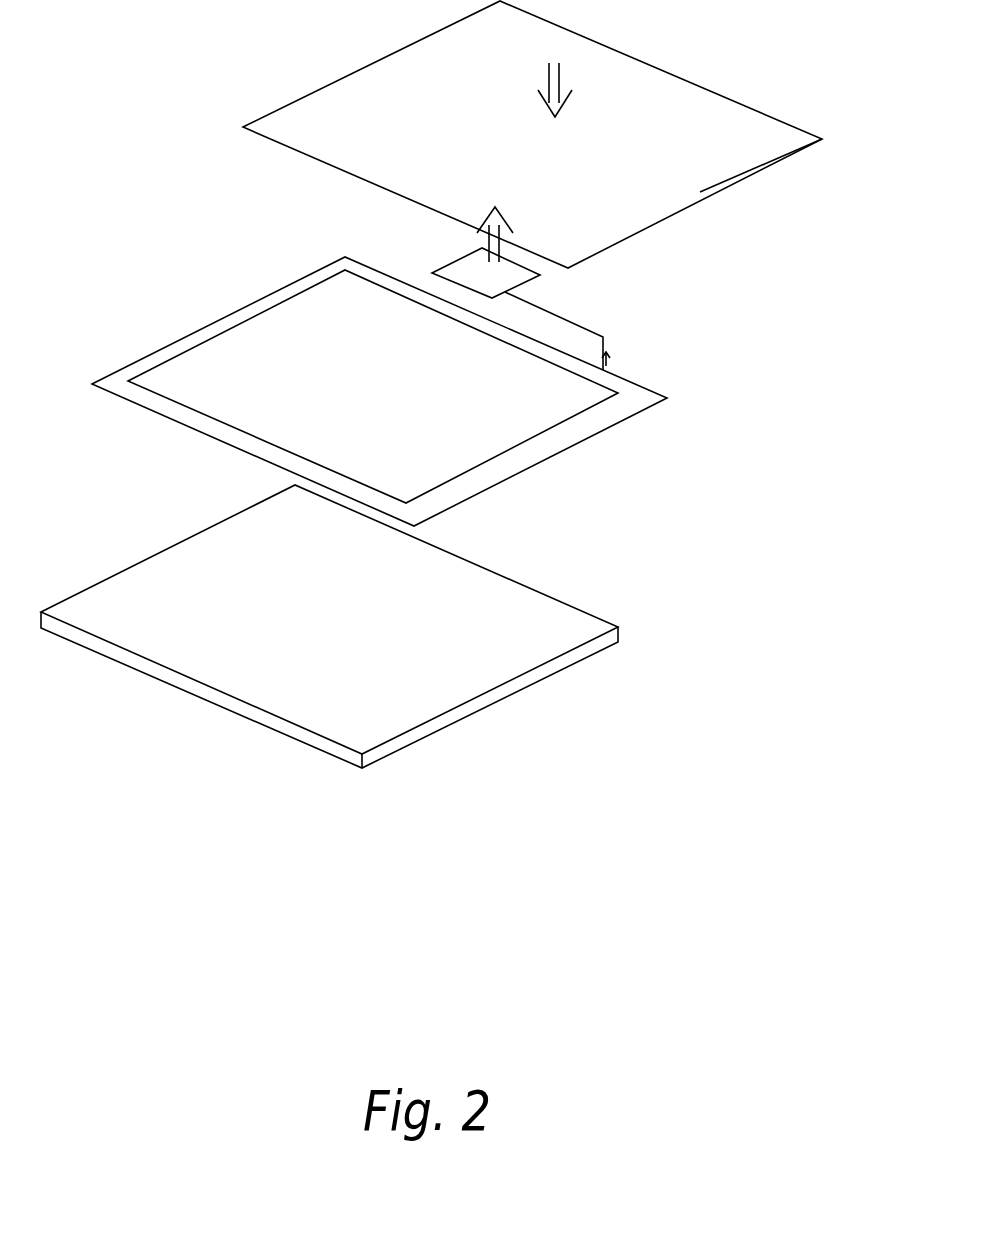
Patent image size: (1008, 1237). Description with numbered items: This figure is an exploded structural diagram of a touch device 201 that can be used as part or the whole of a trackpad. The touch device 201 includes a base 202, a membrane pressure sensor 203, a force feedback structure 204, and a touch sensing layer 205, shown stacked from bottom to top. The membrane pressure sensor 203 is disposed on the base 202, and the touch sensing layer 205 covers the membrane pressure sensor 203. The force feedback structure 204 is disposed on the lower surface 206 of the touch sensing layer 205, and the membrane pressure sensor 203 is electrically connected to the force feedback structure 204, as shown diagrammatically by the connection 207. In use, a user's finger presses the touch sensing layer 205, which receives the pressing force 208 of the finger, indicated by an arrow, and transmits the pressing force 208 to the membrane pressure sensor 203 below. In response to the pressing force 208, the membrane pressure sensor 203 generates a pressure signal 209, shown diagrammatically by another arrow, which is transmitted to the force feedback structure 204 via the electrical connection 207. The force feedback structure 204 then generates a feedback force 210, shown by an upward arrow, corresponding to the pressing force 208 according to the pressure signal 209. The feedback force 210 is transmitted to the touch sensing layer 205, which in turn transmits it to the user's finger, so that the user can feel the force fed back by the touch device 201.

The touch device 201 is at (209, 272).
The base 202 is at (520, 663).
The membrane pressure sensor 203 is at (505, 463).
The force feedback structure 204 is at (533, 280).
The touch sensing layer 205 is at (723, 108).
The lower surface 206 is at (742, 185).
The connection 207 is at (580, 325).
The pressing force 208 is at (560, 86).
The pressure signal 209 is at (610, 358).
The feedback force 210 is at (480, 249).